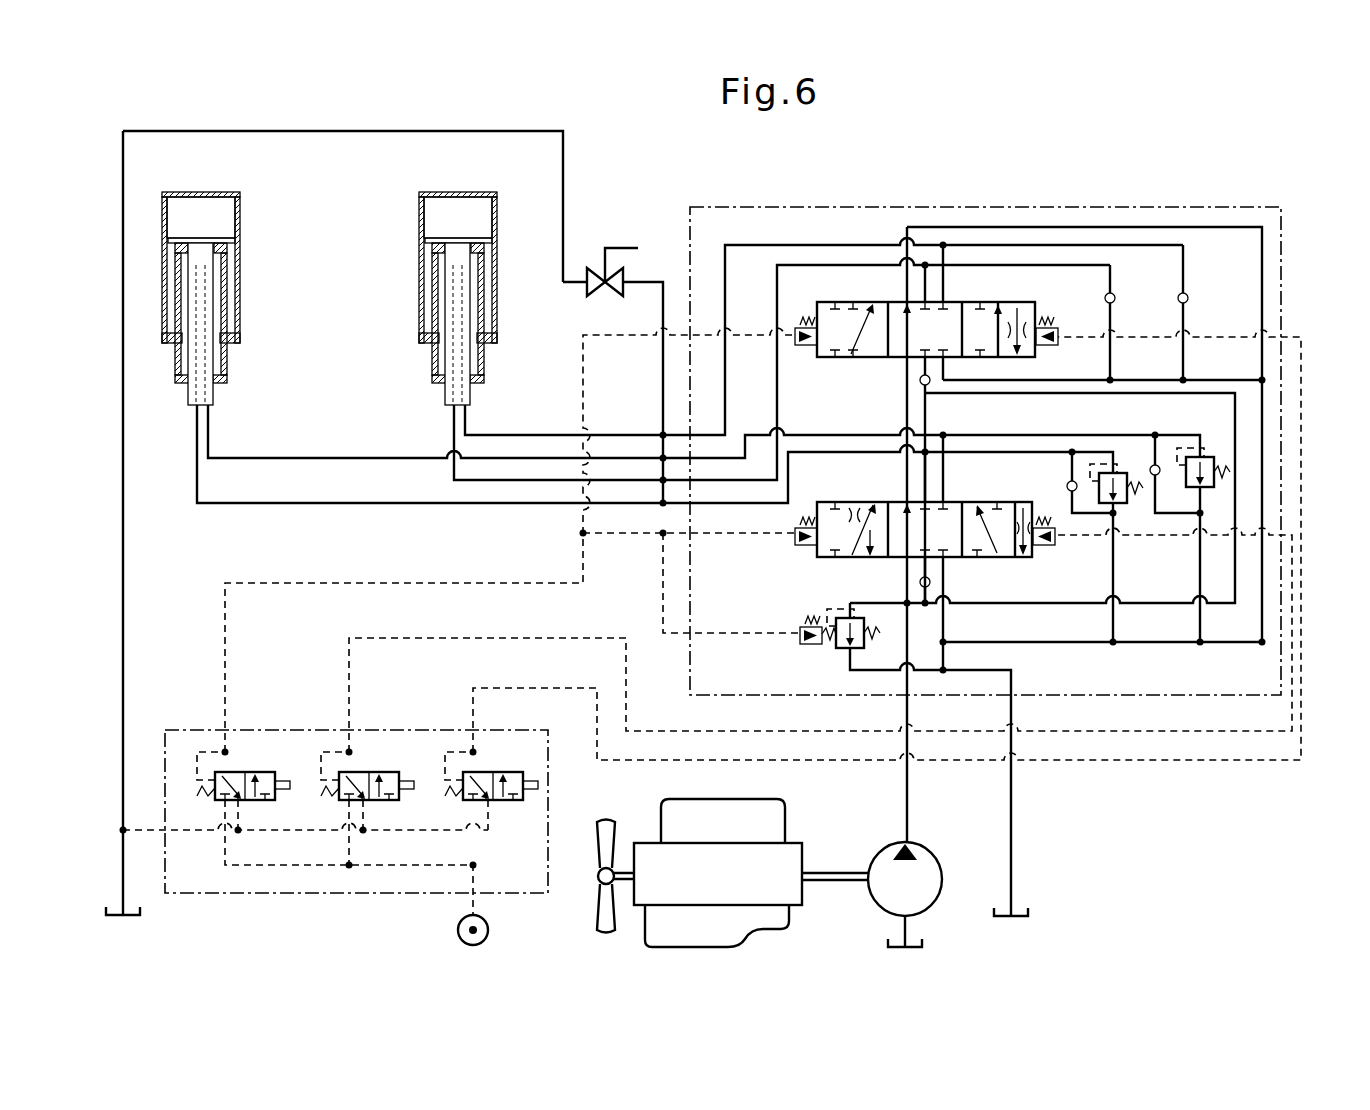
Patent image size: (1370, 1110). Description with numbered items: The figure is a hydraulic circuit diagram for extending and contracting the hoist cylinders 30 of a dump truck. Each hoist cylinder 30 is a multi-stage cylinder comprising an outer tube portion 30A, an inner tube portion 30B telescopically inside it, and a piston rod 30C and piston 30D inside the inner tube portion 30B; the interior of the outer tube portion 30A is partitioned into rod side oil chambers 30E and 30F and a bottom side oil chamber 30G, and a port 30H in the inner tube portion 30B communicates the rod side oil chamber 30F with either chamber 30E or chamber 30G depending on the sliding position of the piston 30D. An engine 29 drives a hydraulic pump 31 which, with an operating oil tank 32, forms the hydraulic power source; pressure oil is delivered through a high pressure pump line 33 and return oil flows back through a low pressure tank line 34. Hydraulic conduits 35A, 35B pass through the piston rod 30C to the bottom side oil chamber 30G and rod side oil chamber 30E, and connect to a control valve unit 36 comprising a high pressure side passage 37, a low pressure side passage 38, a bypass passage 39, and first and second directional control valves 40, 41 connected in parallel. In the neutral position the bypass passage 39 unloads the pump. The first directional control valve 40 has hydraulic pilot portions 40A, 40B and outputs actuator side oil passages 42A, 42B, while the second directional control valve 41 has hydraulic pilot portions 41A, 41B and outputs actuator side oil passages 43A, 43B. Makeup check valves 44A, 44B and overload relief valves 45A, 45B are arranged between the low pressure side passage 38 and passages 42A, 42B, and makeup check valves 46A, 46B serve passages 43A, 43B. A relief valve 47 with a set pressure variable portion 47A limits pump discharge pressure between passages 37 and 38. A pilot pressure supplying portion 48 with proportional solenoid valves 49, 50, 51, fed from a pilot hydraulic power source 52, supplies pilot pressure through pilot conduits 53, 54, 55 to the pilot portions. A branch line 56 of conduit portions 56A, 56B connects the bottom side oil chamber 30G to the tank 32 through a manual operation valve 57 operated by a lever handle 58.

The engine 29 is at (761, 905).
The hoist cylinder 30 is at (342, 305).
The outer tube portion 30A is at (240, 222).
The inner tube portion 30B is at (233, 335).
The piston rod 30C is at (187, 392).
The piston 30D is at (186, 240).
The rod side oil chamber 30E is at (227, 360).
The rod side oil chamber 30F is at (228, 298).
The bottom side oil chamber 30G is at (207, 212).
The port 30H is at (228, 256).
The hydraulic pump 31 is at (940, 863).
The operating oil tank 32 is at (135, 905).
The pump line 33 is at (905, 784).
The tank line 34 is at (1013, 788).
The hydraulic conduit 35A is at (215, 455).
The hydraulic conduit 35B is at (227, 503).
The control valve unit 36 is at (1178, 198).
The high pressure side passage 37 is at (1237, 566).
The low pressure side passage 38 is at (1207, 646).
The bypass passage 39 is at (905, 405).
The first directional control valve 40 is at (860, 560).
The hydraulic pilot portion 40A is at (797, 544).
The hydraulic pilot portion 40B is at (1050, 546).
The second directional control valve 41 is at (840, 301).
The hydraulic pilot portion 41A is at (800, 347).
The hydraulic pilot portion 41B is at (1054, 345).
The actuator side oil passage 42A is at (760, 433).
The actuator side oil passage 42B is at (795, 492).
The actuator side oil passage 43A is at (765, 243).
The actuator side oil passage 43B is at (775, 318).
The check valve 44A is at (1152, 468).
The check valve 44B is at (1067, 482).
The relief valve 45A is at (1202, 457).
The relief valve 45B is at (1128, 490).
The check valve 46A is at (1185, 297).
The check valve 46B is at (1113, 297).
The relief valve 47 is at (838, 650).
The set pressure variable portion 47A is at (808, 646).
The pilot pressure supplying portion 48 is at (310, 895).
The solenoid valve 49 is at (263, 772).
The solenoid valve 50 is at (386, 772).
The solenoid valve 51 is at (496, 772).
The pilot hydraulic power source 52 is at (488, 930).
The pilot conduit 53 is at (365, 583).
The pilot conduit 54 is at (463, 638).
The pilot conduit 55 is at (575, 688).
The branch line 56 is at (125, 585).
The conduit portion 56A is at (663, 357).
The conduit portion 56B is at (563, 160).
The manual operation valve 57 is at (608, 292).
The lever handle 58 is at (620, 248).